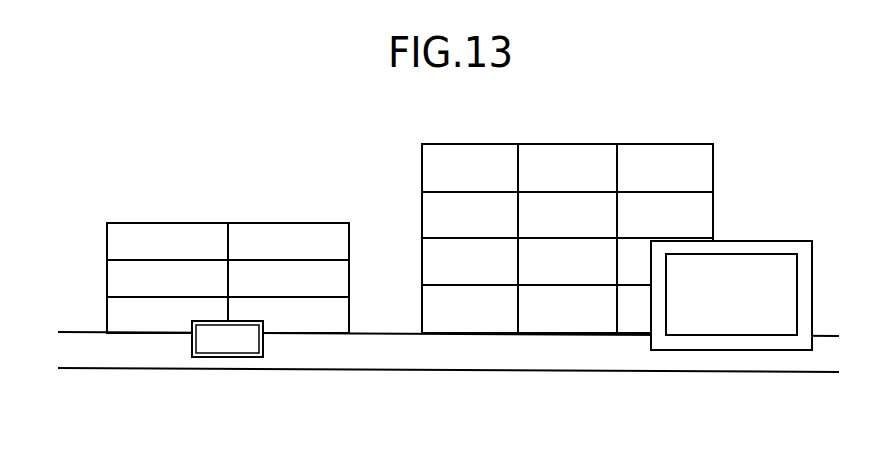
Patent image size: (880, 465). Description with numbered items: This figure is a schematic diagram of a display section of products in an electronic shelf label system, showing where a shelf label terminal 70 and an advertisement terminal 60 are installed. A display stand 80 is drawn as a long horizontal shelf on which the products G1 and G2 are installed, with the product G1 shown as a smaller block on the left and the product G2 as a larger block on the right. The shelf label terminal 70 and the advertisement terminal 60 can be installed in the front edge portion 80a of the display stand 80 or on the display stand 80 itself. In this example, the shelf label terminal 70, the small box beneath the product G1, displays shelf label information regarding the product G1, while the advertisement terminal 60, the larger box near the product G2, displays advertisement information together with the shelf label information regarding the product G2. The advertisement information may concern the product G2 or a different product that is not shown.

The product G1 is at (162, 233).
The product G2 is at (659, 156).
The display stand 80 is at (87, 322).
The front edge portion 80a is at (97, 362).
The shelf label terminal 70 is at (228, 367).
The advertisement terminal 60 is at (737, 362).